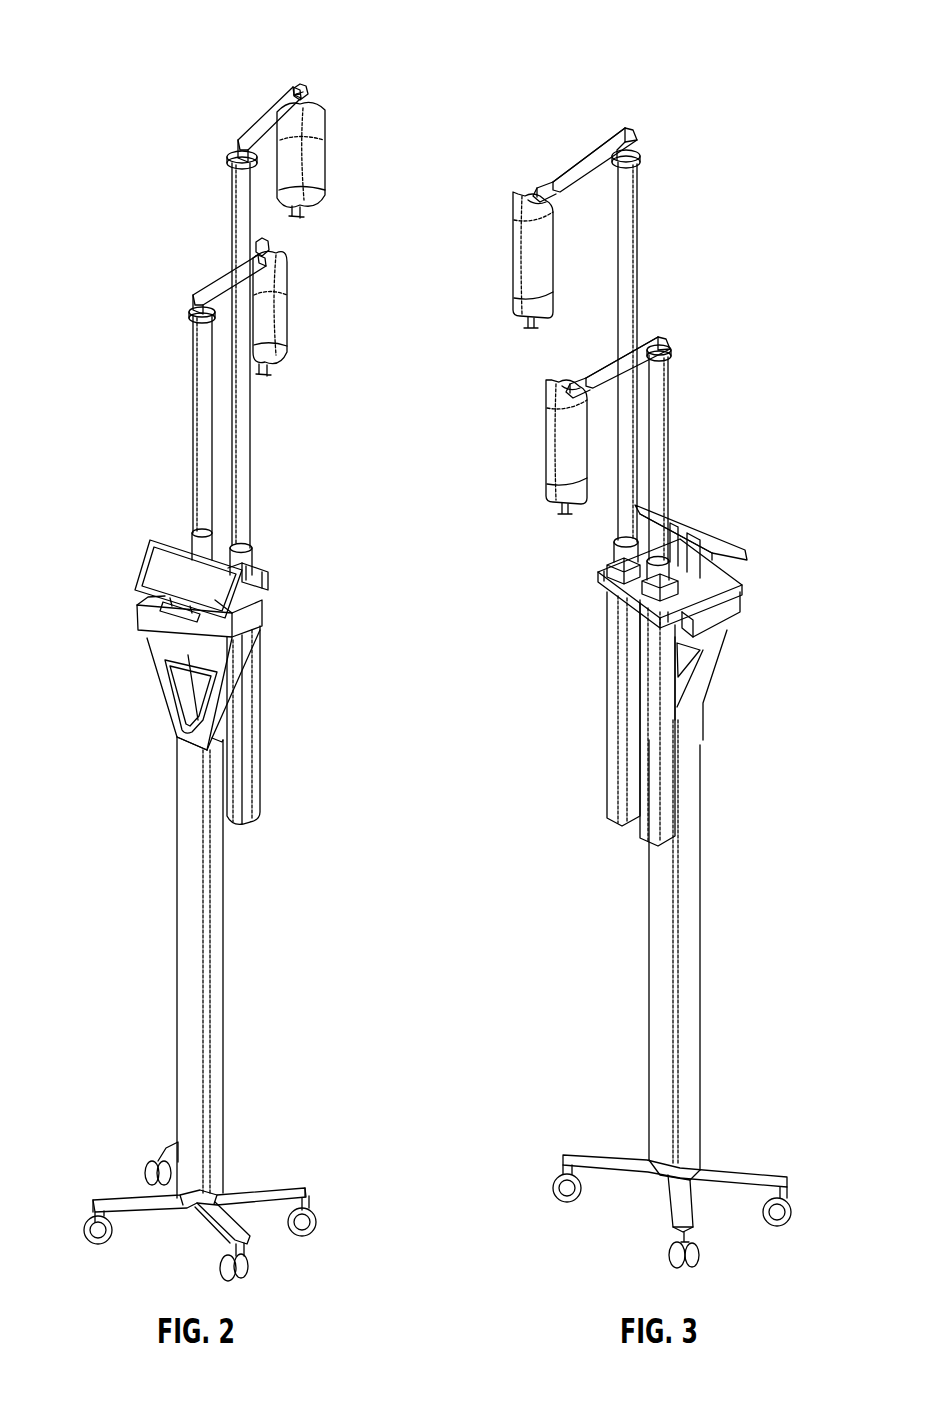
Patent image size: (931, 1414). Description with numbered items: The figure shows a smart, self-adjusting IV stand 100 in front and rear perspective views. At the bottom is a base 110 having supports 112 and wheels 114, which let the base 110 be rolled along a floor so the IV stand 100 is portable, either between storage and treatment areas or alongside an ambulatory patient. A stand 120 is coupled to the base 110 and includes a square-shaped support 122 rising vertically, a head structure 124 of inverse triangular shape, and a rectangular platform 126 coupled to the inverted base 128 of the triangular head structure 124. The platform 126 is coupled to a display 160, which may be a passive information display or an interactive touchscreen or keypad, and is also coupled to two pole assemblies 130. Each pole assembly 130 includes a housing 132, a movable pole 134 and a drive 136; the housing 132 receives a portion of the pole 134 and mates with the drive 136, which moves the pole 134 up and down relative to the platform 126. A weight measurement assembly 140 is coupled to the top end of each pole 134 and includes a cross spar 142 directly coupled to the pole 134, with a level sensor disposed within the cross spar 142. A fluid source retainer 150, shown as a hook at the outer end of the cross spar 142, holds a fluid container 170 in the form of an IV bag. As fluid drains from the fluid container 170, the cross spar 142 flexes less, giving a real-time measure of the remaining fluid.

In FIG. 2, the IV stand 100 is at (358, 50).
In FIG. 3, the IV stand 100 is at (704, 97).
In FIG. 2, the base 110 is at (262, 1174).
In FIG. 3, the base 110 is at (745, 1170).
In FIG. 2, the supports 112 is at (112, 1195).
In FIG. 2, the wheels 114 is at (85, 1240).
In FIG. 2, the stand 120 is at (236, 926).
In FIG. 3, the stand 120 is at (702, 1003).
In FIG. 2, the support 122 is at (188, 1012).
In FIG. 2, the head structure 124 is at (160, 662).
In FIG. 3, the head structure 124 is at (701, 685).
In FIG. 2, the platform 126 is at (253, 600).
In FIG. 3, the platform 126 is at (700, 598).
In FIG. 2, the inverted base 128 is at (200, 668).
In FIG. 3, the inverted base 128 is at (688, 660).
In FIG. 2, the pole assembly 130 is at (256, 474).
In FIG. 2, the housing 132 is at (256, 776).
In FIG. 3, the housing 132 is at (614, 740).
In FIG. 2, the movable pole 134 is at (250, 398).
In FIG. 3, the movable pole 134 is at (633, 248).
In FIG. 3, the drive 136 is at (600, 578).
In FIG. 2, the weight measurement assembly 140 is at (269, 106).
In FIG. 2, the cross spar 142 is at (246, 130).
In FIG. 3, the fluid source retainer 150 is at (530, 192).
In FIG. 2, the display 160 is at (153, 570).
In FIG. 3, the display 160 is at (700, 542).
In FIG. 2, the fluid container 170 is at (325, 180).
In FIG. 3, the fluid container 170 is at (518, 282).